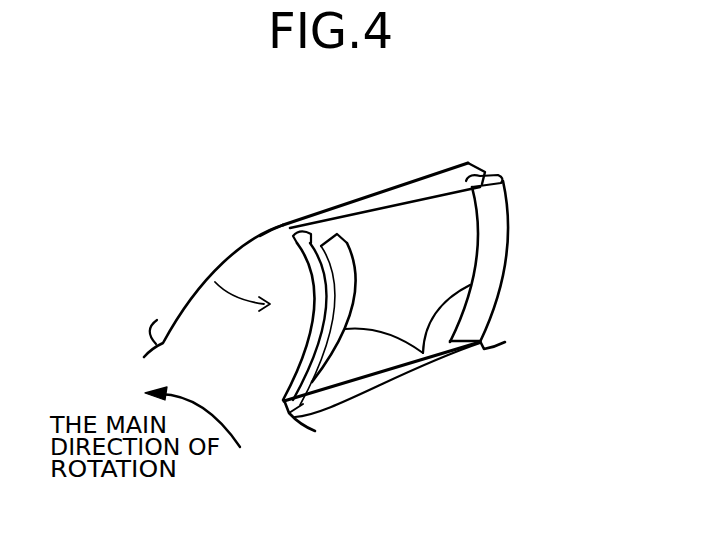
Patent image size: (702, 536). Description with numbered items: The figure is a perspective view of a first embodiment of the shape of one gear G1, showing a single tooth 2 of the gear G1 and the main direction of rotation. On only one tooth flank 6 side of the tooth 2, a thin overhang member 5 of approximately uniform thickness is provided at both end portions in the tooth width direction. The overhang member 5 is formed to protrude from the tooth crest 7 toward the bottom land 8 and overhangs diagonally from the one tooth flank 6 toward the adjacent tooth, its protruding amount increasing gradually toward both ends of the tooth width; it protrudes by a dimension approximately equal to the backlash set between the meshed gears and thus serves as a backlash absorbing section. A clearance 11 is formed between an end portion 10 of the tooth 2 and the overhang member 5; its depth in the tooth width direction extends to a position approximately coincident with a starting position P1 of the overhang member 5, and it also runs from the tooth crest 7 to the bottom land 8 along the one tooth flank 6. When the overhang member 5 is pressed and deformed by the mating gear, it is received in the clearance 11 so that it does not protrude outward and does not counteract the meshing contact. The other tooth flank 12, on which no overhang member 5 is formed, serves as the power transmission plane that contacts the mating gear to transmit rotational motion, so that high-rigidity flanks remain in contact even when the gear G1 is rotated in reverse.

The tooth 2 is at (215, 282).
The other tooth flank 12 is at (245, 244).
The end portion 10 is at (200, 322).
The tooth crest 7 is at (352, 217).
The one tooth flank 6 is at (417, 262).
The clearance 11 is at (298, 233).
The overhang member 5 is at (489, 265).
The bottom land 8 is at (310, 421).
The starting position P1 is at (423, 353).
The gear G1 is at (528, 230).